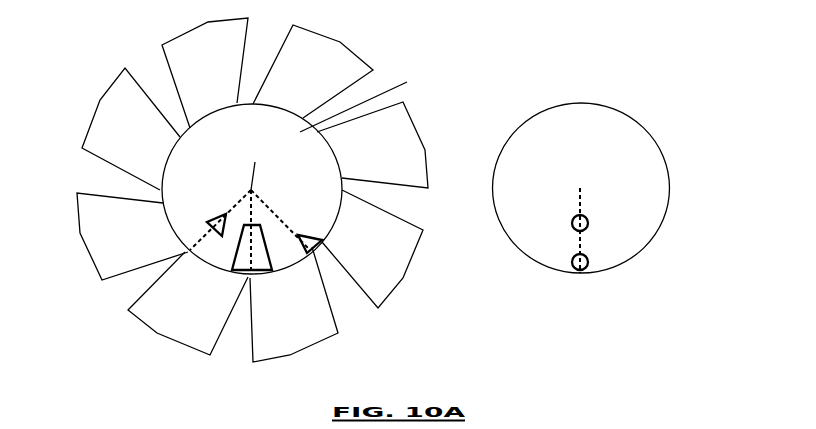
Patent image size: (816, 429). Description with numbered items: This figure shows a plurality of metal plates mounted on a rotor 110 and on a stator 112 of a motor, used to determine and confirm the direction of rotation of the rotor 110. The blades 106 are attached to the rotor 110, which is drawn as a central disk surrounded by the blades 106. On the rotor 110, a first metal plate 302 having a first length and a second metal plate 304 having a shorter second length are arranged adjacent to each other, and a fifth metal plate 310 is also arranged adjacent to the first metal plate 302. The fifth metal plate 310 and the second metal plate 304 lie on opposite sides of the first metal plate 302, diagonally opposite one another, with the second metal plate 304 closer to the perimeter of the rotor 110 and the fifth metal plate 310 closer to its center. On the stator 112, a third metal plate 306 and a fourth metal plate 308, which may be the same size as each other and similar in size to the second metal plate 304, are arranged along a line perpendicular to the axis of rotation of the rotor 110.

The blades 106 is at (322, 33).
The rotor 110 is at (407, 82).
The stator 112 is at (648, 135).
The first metal plate 302 is at (255, 162).
The second metal plate 304 is at (308, 235).
The third metal plate 306 is at (588, 223).
The fourth metal plate 308 is at (588, 262).
The fifth metal plate 310 is at (215, 215).